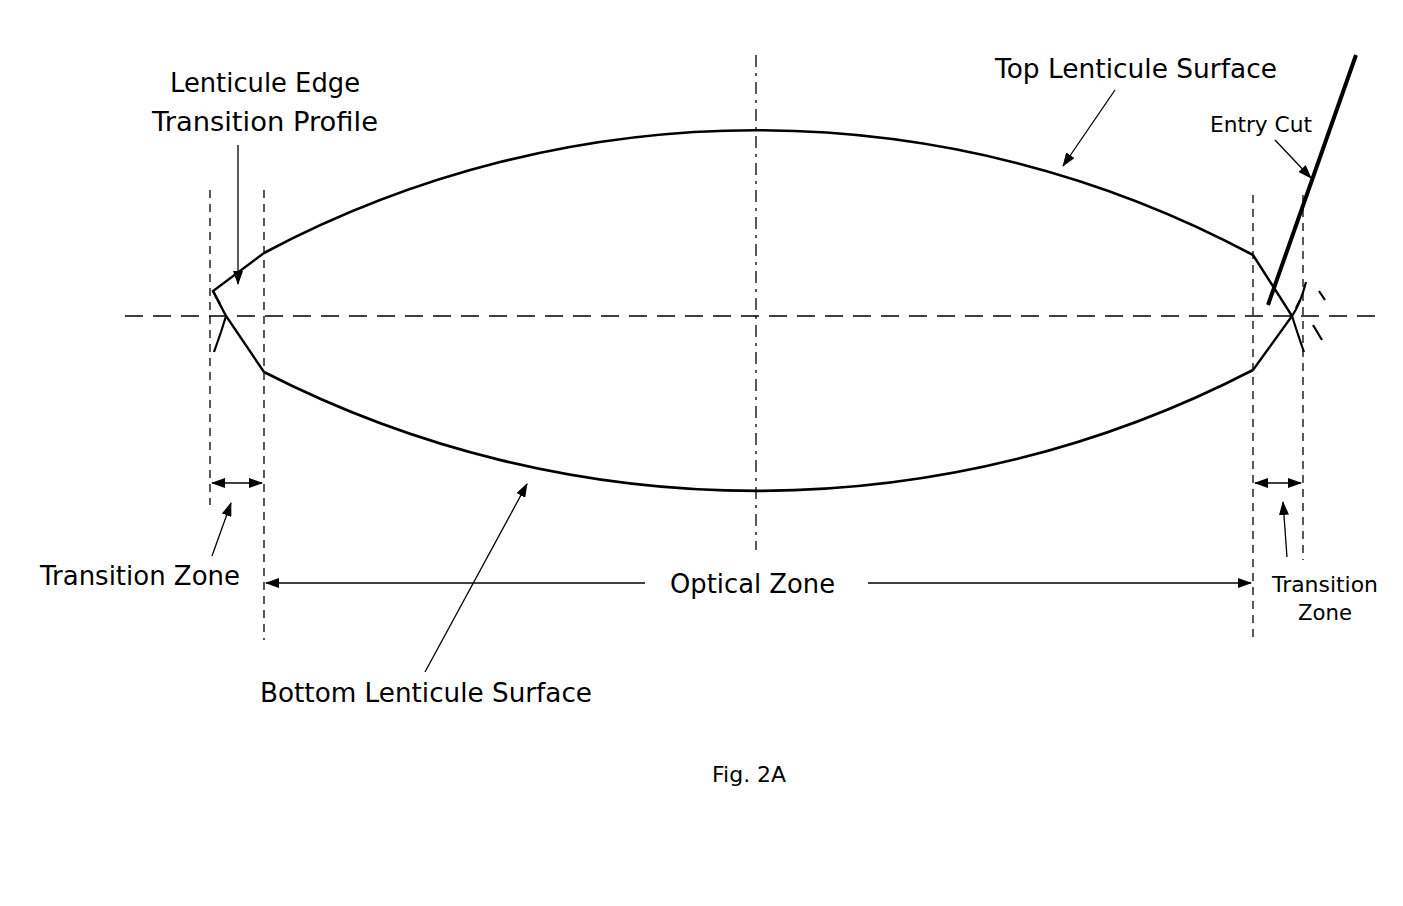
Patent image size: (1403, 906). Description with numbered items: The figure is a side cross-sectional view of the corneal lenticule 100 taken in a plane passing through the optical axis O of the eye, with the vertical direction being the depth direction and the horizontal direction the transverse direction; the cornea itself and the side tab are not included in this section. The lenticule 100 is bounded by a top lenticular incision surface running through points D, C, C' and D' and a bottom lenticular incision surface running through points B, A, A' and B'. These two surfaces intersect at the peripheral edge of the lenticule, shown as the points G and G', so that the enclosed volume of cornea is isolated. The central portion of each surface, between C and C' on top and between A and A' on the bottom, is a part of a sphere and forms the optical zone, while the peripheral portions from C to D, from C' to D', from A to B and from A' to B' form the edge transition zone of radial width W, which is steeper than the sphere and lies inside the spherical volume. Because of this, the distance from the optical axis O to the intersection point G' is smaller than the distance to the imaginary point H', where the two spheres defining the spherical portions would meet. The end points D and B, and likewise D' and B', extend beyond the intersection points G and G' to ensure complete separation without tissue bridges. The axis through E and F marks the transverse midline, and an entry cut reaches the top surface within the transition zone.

The lenticule 100 is at (567, 74).
The bottom spherical portion end point A is at (200, 413).
The bottom edge transition portion end point B is at (175, 265).
The top spherical portion end point C is at (280, 210).
The top edge transition portion end point D is at (172, 367).
The lenticule edge apex E is at (166, 317).
The intersection point G is at (173, 339).
The optical axis O is at (770, 301).
The lenticule edge apex (right) F is at (1344, 319).
The transition zone width W is at (756, 467).
The bottom spherical portion end point A' is at (1306, 420).
The bottom edge transition portion end point B' is at (1322, 266).
The top spherical portion end point C' is at (1231, 219).
The top edge transition portion end point D' is at (1329, 364).
The intersection point G' is at (1225, 417).
The imaginary intersection point H' is at (1340, 301).